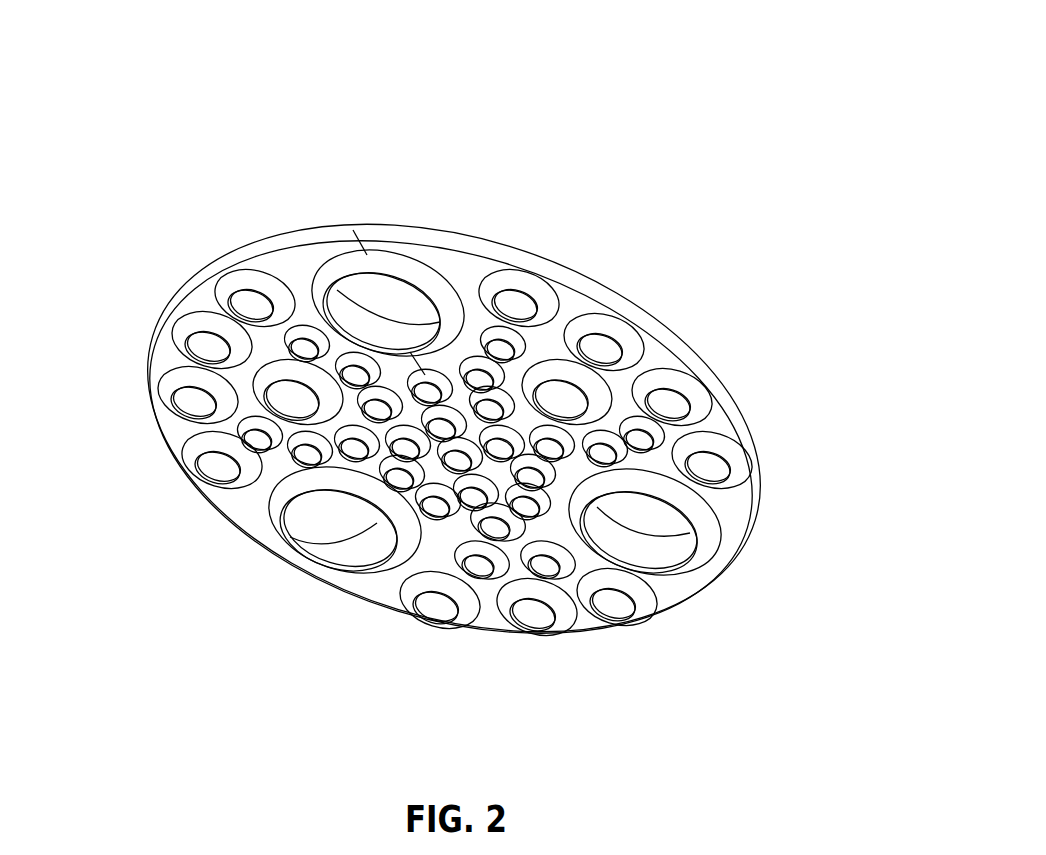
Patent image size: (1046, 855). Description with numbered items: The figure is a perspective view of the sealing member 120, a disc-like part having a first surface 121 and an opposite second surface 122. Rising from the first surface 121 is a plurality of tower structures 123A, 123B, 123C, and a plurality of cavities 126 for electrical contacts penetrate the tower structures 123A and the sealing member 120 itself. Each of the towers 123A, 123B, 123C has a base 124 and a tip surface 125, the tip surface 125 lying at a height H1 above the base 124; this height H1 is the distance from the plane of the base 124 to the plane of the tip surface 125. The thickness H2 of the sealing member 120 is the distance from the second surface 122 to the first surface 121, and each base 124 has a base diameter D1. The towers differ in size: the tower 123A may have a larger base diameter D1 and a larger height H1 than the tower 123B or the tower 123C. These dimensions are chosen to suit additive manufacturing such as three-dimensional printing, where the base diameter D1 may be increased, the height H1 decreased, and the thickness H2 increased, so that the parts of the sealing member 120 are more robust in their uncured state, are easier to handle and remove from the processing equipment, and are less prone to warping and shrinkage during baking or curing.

The sealing member 120 is at (485, 40).
The first surface 121 is at (172, 362).
The second surface 122 is at (182, 292).
The tower structure 123A is at (697, 510).
The tower structure 123B is at (730, 453).
The tower structure 123C is at (523, 343).
The base 124 is at (257, 476).
The tip surface 125 is at (427, 593).
The cavity 126 is at (353, 522).
The height H1 is at (340, 289).
The thickness H2 is at (367, 255).
The base diameter D1 is at (572, 627).